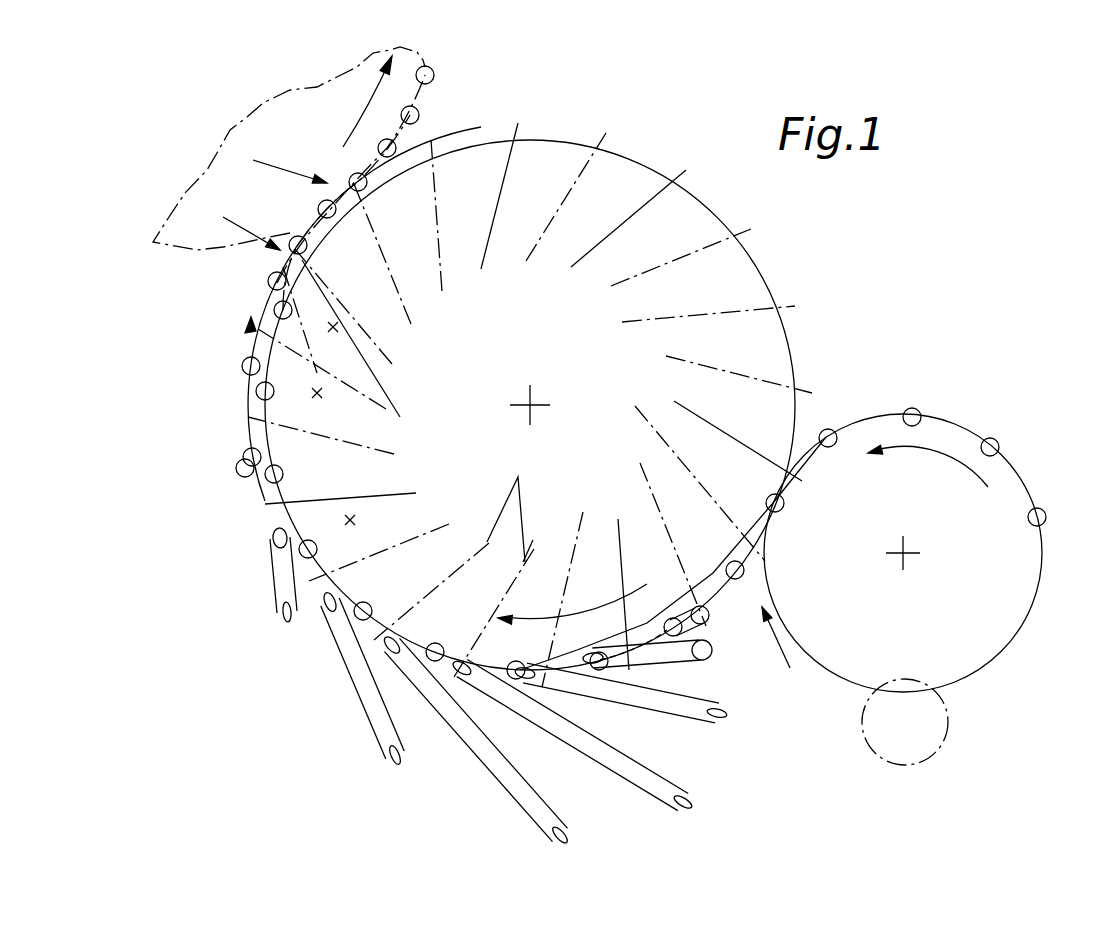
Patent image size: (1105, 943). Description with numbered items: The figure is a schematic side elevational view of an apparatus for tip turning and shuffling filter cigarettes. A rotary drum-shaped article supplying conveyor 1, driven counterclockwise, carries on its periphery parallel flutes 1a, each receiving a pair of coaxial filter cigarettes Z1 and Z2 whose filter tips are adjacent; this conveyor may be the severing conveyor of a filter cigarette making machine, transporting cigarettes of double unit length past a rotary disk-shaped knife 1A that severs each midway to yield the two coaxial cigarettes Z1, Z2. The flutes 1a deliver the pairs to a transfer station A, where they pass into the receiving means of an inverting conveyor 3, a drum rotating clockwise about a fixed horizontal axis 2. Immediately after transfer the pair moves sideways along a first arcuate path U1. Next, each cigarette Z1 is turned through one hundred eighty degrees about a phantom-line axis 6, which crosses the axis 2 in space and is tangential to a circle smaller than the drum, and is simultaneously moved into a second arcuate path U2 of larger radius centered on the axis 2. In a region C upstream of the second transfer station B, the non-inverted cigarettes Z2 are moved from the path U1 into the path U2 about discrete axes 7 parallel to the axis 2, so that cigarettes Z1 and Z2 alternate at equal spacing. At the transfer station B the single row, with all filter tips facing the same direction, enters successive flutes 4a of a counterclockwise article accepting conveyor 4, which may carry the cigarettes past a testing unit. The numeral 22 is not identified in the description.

The article supplying conveyor 1 is at (985, 598).
The flutes 1a is at (830, 448).
The rotary disk-shaped knife 1A is at (940, 738).
The axis 2 is at (535, 402).
The inverting conveyor 3 is at (478, 370).
The article accepting conveyor 4 is at (313, 120).
The flutes 4a is at (423, 66).
The axis 6 is at (510, 507).
The axes 7 is at (340, 326).
The guide 22 is at (305, 347).
The transfer station A is at (784, 654).
The second transfer station B is at (277, 165).
The region C is at (239, 223).
The arcuate path U1 is at (278, 522).
The second arcuate path U2 is at (248, 430).
The filter cigarette Z1 is at (434, 75).
The filter cigarette Z2 is at (419, 115).